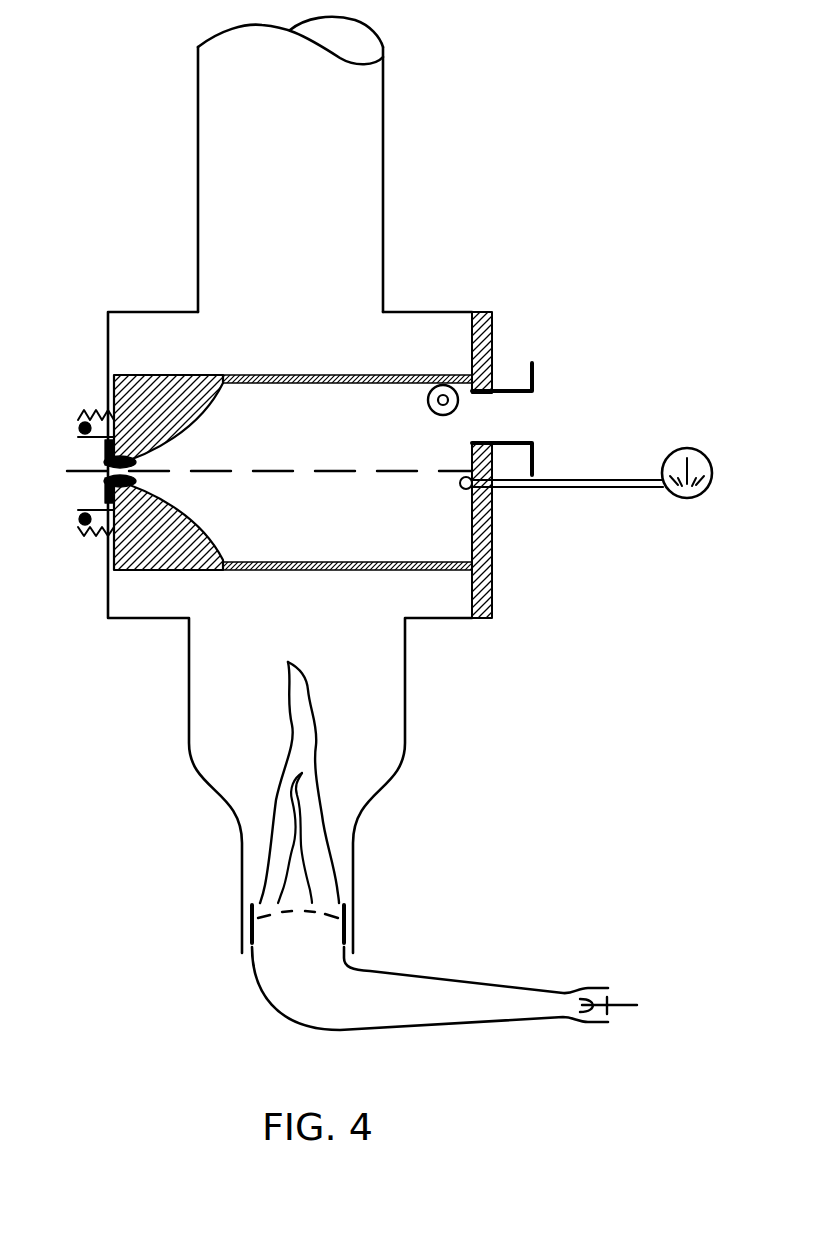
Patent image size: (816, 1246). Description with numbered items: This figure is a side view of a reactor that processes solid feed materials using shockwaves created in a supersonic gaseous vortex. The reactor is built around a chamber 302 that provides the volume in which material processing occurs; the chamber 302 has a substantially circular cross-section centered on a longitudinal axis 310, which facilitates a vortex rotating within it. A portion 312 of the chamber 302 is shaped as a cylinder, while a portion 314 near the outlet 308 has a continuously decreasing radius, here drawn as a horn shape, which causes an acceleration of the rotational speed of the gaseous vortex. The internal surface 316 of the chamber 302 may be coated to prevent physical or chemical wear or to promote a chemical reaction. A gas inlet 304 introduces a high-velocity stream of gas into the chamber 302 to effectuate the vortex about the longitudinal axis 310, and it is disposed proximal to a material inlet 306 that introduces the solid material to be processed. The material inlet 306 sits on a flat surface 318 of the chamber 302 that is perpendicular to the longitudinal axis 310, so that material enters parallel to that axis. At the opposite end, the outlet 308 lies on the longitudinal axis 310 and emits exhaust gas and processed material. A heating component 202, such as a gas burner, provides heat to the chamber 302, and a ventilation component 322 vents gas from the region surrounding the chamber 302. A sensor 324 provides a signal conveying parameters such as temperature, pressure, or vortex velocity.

The heating component 202 is at (383, 985).
The chamber 302 is at (492, 548).
The gas inlet 304 is at (428, 400).
The material inlet 306 is at (517, 442).
The outlet 308 is at (103, 452).
The longitudinal axis 310 is at (343, 470).
The portion of chamber shaped as a cylinder 312 is at (302, 383).
The portion of chamber having continuously decreasing radius 314 is at (208, 413).
The internal surface 316 is at (313, 561).
The flat surface 318 is at (472, 530).
The ventilation component 322 is at (383, 145).
The sensor 324 is at (460, 487).